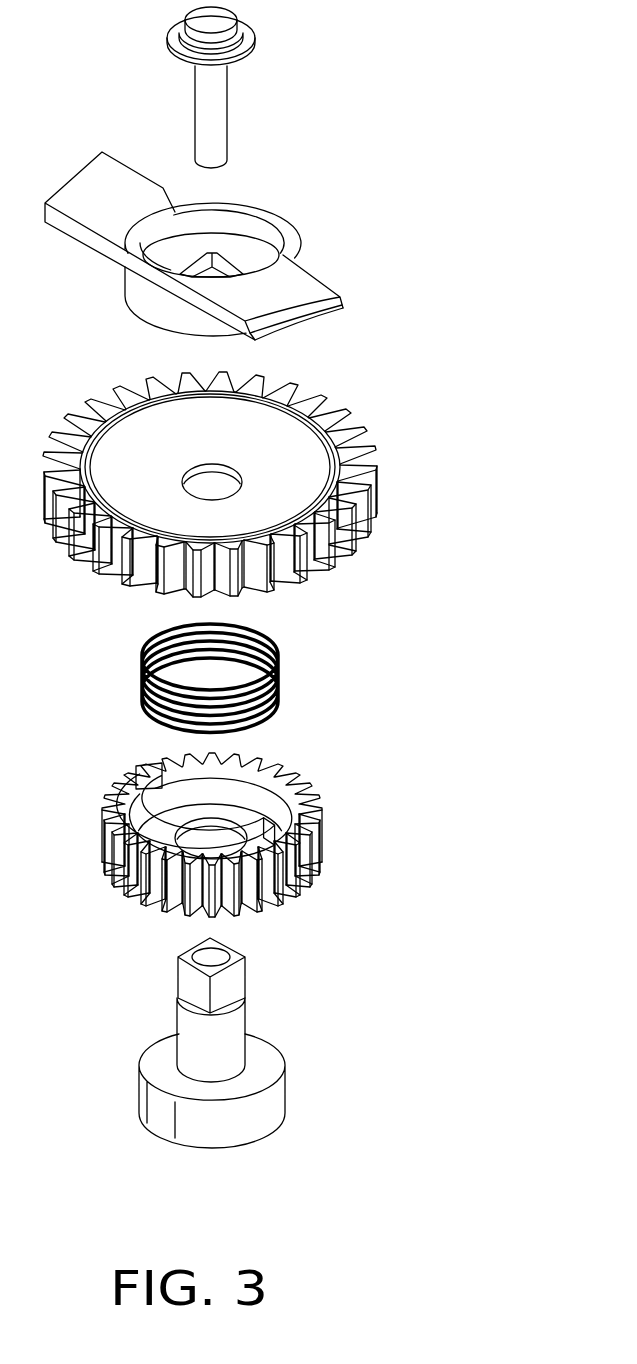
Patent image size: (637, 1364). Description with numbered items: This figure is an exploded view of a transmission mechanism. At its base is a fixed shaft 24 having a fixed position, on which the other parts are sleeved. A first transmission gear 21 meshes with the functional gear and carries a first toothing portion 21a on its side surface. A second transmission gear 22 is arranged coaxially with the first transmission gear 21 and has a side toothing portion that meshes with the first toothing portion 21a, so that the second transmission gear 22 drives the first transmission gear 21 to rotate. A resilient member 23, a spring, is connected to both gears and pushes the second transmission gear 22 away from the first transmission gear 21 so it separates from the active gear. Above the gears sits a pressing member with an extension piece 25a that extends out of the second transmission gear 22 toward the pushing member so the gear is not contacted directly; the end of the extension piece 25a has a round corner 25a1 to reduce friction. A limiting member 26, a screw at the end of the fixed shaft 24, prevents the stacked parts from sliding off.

The limiting member 26 is at (212, 112).
The extension piece 25a is at (280, 276).
The round corner 25a1 is at (313, 315).
The second transmission gear 22 is at (373, 474).
The resilient member 23 is at (275, 699).
The first transmission gear 21 is at (269, 835).
The first toothing portion 21a is at (307, 814).
The fixed shaft 24 is at (227, 1025).